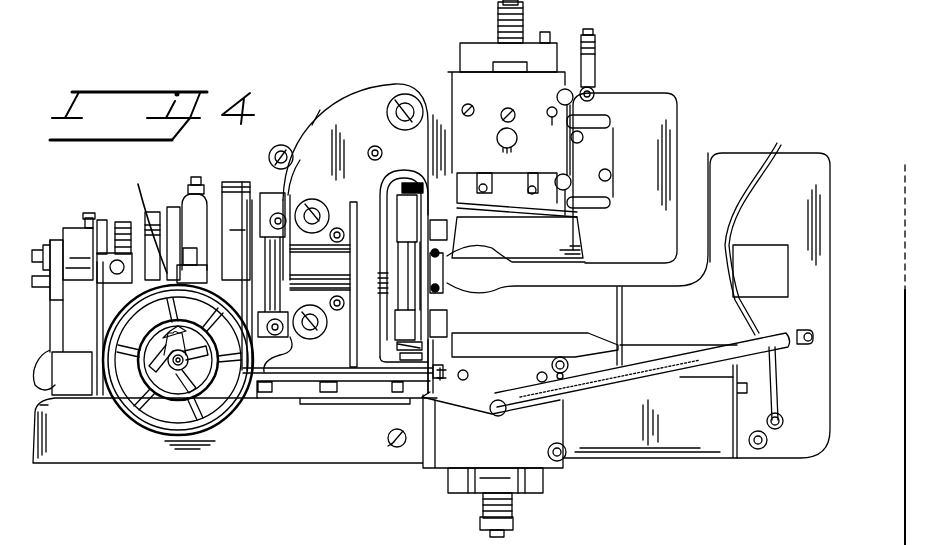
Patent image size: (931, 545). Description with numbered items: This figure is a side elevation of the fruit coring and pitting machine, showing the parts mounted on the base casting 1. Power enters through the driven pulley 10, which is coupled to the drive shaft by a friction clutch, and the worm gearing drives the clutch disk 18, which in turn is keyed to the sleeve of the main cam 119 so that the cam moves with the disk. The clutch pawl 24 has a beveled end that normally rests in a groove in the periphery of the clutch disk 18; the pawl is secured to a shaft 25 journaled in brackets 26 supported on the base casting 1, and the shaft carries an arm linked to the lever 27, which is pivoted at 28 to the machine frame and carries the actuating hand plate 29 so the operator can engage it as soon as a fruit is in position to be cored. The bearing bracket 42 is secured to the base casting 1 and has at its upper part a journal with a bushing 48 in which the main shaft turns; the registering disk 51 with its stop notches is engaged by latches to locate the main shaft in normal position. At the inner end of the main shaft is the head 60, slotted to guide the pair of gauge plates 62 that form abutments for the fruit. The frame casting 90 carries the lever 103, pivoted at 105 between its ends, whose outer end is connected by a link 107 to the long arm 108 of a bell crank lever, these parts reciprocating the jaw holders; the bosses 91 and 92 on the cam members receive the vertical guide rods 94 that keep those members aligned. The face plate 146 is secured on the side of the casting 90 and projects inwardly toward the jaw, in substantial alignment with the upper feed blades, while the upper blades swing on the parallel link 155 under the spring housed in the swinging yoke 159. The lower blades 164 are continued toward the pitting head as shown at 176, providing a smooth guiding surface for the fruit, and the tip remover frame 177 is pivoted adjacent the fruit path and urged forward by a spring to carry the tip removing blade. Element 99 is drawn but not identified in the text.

The base casting 1 is at (265, 462).
The pulley 10 is at (122, 411).
The clutch disk 18 is at (160, 212).
The clutch pawl 24 is at (138, 184).
The shaft 25 is at (293, 375).
The brackets 26 is at (430, 377).
The lever 27 is at (695, 362).
The pivot 28 is at (497, 416).
The actuating hand plate 29 is at (780, 344).
The bearing bracket 42 is at (92, 348).
The bushing 48 is at (72, 236).
The registering disk 51 is at (125, 222).
The head 60 is at (239, 540).
The gauge plates 62 is at (472, 268).
The frame casting 90 is at (453, 97).
The boss 91 is at (397, 207).
The boss 92 is at (437, 313).
The vertical guide rods 94 is at (440, 253).
The adjusting screw 99 is at (524, 22).
The lever 103 is at (327, 104).
The pivot 105 is at (404, 104).
The links 107 is at (287, 147).
The long arms 108 is at (283, 186).
The main cam 119 is at (222, 186).
The face plate 146 is at (517, 237).
The parallel link 155 is at (42, 398).
The swinging yoke 159 is at (594, 65).
The lower blades 164 is at (641, 145).
The continuation of lower blades 176 is at (594, 332).
The frame 177 is at (725, 231).